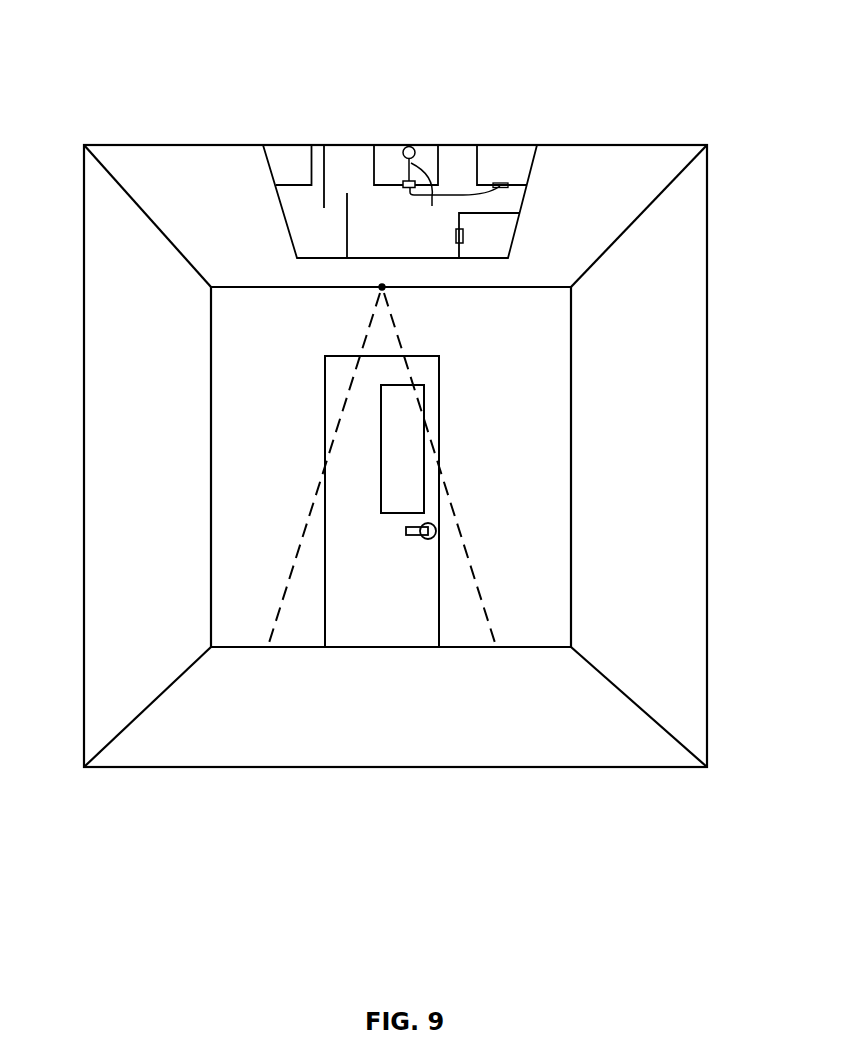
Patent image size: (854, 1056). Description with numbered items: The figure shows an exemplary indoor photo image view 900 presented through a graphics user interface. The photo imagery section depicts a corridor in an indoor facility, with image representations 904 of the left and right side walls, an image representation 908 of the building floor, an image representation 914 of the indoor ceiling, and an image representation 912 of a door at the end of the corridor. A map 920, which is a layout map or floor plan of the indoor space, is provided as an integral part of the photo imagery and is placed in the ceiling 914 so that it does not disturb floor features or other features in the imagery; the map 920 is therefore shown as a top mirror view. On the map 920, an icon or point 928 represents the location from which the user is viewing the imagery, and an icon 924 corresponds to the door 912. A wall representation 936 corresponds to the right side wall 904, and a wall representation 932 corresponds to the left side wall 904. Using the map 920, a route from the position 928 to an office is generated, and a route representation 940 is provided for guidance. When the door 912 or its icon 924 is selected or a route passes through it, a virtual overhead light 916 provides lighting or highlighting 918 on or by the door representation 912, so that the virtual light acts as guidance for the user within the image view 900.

The image view 900 is at (588, 128).
The image representations of walls 904 is at (102, 245).
The image representation of building floor 908 is at (403, 716).
The image representation of door 912 is at (403, 579).
The image representation of indoor ceiling 914 is at (234, 239).
The virtual overhead light 916 is at (383, 285).
The lighting or highlighting 918 is at (455, 529).
The map 920 is at (340, 158).
The icon 924 is at (403, 183).
The point 928 is at (409, 146).
The wall representation 932 is at (373, 155).
The wall representation 936 is at (460, 171).
The route representation 940 is at (460, 197).